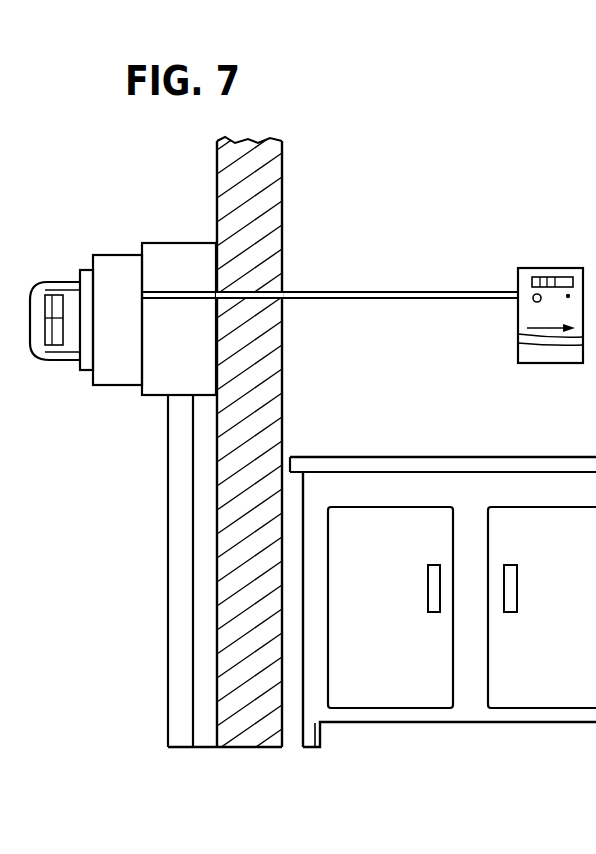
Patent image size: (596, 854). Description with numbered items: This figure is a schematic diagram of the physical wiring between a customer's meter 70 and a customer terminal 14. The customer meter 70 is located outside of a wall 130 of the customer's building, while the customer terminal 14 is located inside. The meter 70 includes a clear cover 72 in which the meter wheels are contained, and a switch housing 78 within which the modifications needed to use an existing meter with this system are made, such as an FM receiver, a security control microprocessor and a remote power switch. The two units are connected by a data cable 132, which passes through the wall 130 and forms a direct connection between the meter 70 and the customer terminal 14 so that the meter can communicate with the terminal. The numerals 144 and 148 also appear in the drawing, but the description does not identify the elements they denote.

The meter / readout unit 14 is at (528, 268).
The mounting assembly 70 is at (123, 342).
The end cap / housing 72 is at (52, 282).
The body member 78 is at (118, 257).
The wall 130 is at (283, 163).
The rod / cable 132 is at (364, 292).
The component (off-sheet) 144 is at (582, 47).
The cabinet / bench 148 is at (443, 469).